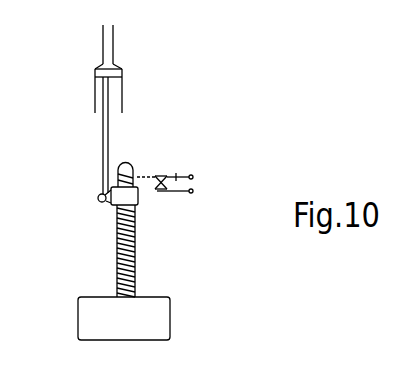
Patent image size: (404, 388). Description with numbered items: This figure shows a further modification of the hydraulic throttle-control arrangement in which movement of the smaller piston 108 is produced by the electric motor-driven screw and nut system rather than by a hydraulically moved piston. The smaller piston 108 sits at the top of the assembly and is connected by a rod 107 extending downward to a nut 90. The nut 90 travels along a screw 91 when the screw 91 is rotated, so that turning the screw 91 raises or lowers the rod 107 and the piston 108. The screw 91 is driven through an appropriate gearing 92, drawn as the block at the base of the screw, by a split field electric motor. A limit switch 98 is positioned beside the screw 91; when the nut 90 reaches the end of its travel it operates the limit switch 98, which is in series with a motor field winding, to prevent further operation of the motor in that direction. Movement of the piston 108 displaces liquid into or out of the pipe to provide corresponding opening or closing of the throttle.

The nut 90 is at (112, 207).
The screw 91 is at (138, 227).
The gearing 92 is at (135, 329).
The limit switch 98 is at (177, 176).
The rod 107 is at (104, 141).
The smaller piston 108 is at (114, 75).